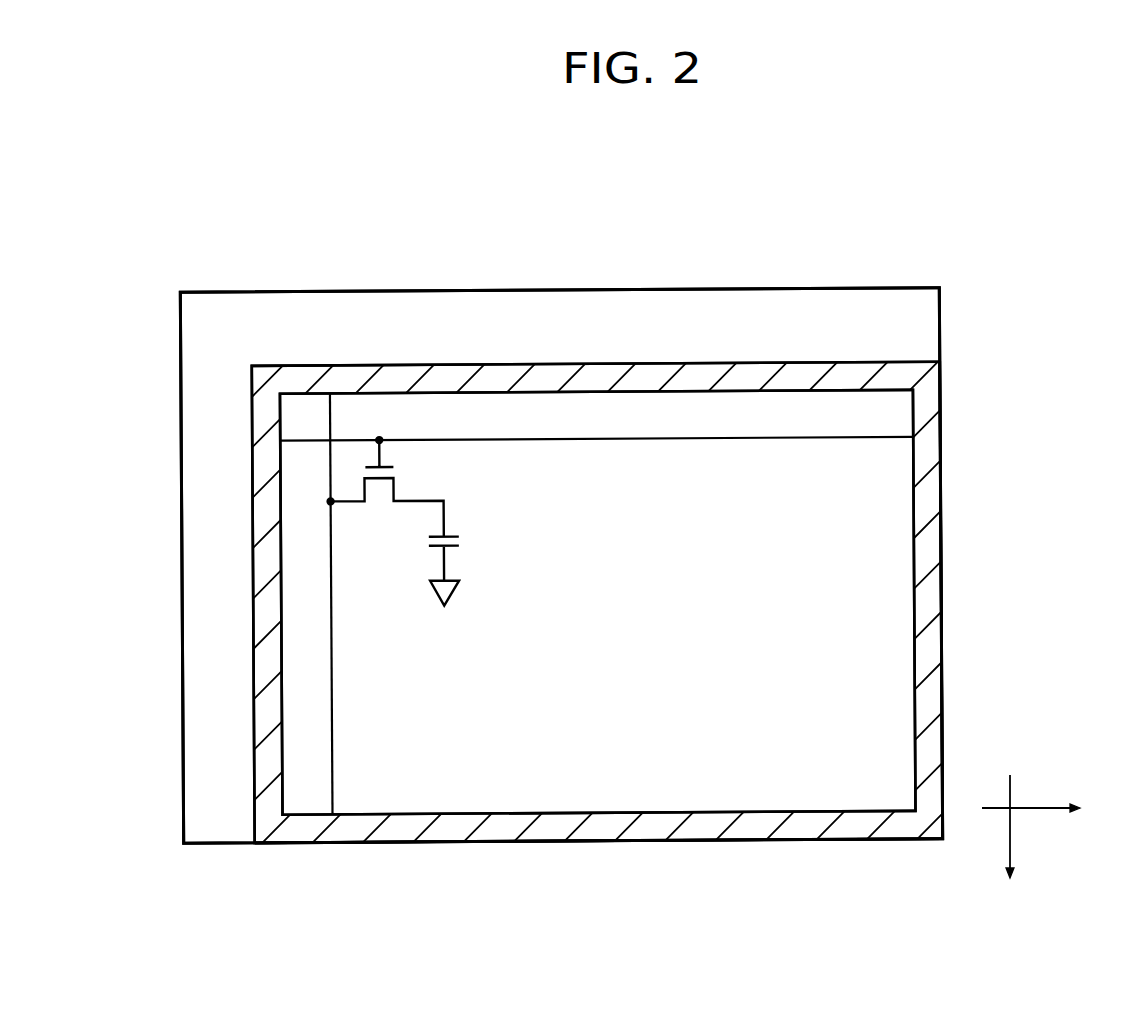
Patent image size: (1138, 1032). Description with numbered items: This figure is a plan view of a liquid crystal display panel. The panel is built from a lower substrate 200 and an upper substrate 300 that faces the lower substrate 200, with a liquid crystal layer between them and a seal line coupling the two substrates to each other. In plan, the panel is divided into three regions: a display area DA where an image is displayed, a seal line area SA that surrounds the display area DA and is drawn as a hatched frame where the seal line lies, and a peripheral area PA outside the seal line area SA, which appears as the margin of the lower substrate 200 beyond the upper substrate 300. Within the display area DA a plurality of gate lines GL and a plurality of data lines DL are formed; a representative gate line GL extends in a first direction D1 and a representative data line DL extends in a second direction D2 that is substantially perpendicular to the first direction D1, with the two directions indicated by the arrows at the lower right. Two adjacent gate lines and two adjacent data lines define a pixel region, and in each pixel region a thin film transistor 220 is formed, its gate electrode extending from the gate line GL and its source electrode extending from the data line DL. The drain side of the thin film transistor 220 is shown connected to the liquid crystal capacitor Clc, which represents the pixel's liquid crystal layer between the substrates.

The lower substrate 200 is at (928, 316).
The upper substrate 300 is at (890, 363).
The thin film transistor 220 is at (401, 485).
The liquid crystal capacitor Clc is at (466, 566).
The gate lines GL is at (680, 439).
The data lines DL is at (332, 661).
The peripheral area PA is at (215, 566).
The seal line area SA is at (264, 661).
The display area DA is at (857, 657).
The first direction D1 is at (1045, 807).
The second direction D2 is at (1013, 841).